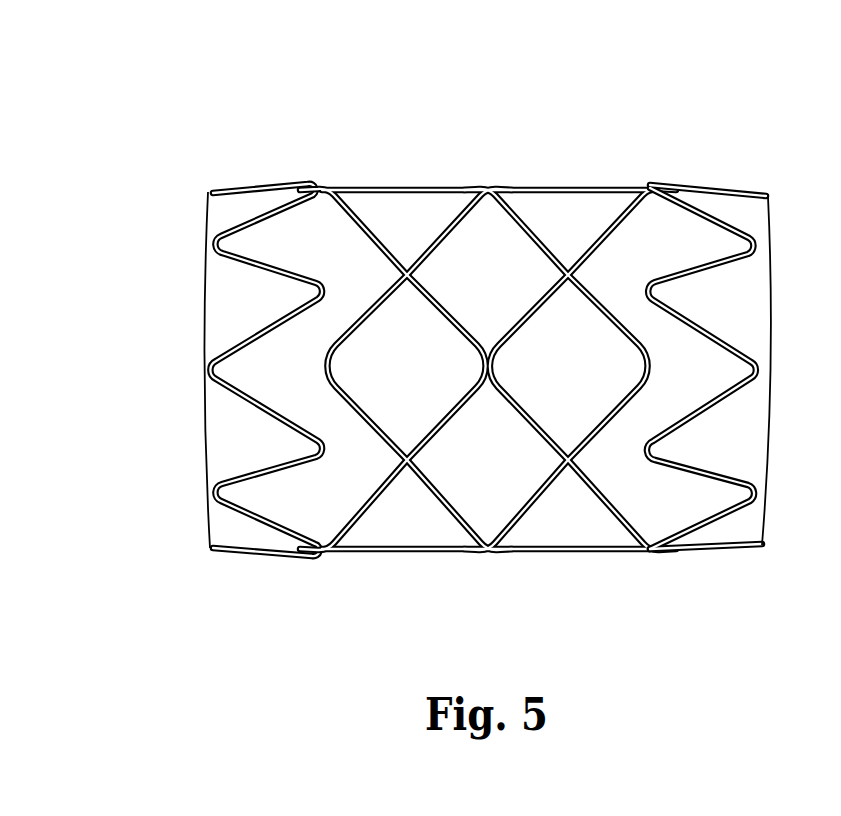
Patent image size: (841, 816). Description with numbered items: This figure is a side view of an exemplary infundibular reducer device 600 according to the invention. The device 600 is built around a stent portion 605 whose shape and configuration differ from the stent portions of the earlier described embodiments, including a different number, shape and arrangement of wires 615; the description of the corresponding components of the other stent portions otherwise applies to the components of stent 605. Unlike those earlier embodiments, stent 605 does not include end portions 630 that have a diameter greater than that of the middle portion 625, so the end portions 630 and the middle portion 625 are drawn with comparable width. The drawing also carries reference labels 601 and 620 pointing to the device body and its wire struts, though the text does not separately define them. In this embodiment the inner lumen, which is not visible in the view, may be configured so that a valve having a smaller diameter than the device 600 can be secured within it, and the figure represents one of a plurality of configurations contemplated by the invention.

The infundibular reducer device 600 is at (724, 110).
The stent body 601 is at (156, 360).
The stent portion 605 is at (462, 137).
The wires 615 is at (331, 188).
The struts 620 is at (668, 230).
The middle portion 625 is at (650, 586).
The end portions 630 is at (325, 586).